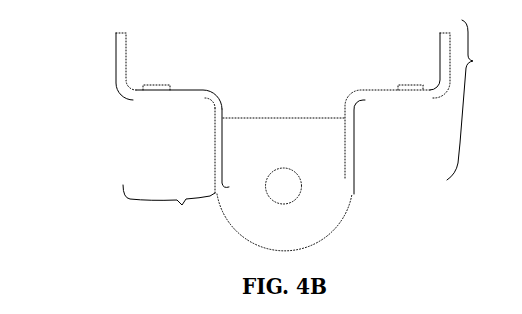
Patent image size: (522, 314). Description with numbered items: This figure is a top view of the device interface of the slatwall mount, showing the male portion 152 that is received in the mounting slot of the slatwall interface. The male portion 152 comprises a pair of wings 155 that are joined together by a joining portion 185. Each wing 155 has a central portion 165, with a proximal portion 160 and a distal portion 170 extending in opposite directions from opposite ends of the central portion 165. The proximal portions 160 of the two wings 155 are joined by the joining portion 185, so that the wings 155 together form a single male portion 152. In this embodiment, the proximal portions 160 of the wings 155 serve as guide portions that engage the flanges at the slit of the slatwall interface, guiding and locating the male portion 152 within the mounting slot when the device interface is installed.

The male portion 152 is at (425, 107).
The wings 155 is at (204, 208).
The proximal portions 160 is at (213, 143).
The central portion 165 is at (153, 95).
The distal portions 170 is at (114, 42).
The joining portion 185 is at (276, 123).